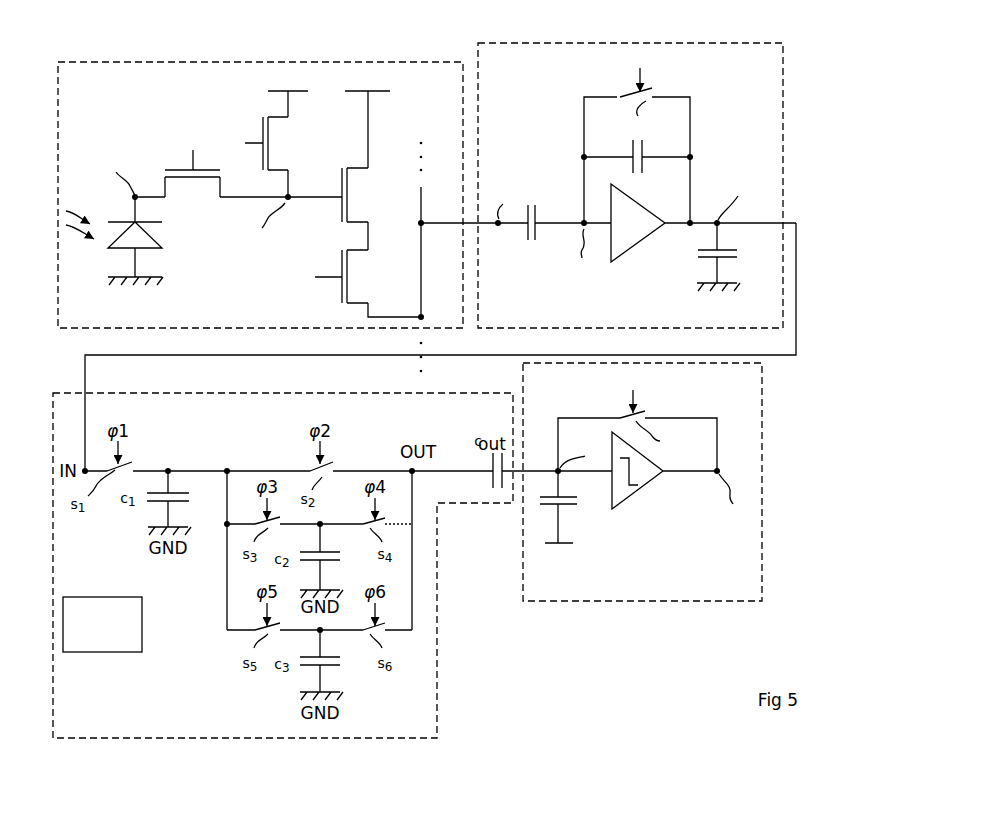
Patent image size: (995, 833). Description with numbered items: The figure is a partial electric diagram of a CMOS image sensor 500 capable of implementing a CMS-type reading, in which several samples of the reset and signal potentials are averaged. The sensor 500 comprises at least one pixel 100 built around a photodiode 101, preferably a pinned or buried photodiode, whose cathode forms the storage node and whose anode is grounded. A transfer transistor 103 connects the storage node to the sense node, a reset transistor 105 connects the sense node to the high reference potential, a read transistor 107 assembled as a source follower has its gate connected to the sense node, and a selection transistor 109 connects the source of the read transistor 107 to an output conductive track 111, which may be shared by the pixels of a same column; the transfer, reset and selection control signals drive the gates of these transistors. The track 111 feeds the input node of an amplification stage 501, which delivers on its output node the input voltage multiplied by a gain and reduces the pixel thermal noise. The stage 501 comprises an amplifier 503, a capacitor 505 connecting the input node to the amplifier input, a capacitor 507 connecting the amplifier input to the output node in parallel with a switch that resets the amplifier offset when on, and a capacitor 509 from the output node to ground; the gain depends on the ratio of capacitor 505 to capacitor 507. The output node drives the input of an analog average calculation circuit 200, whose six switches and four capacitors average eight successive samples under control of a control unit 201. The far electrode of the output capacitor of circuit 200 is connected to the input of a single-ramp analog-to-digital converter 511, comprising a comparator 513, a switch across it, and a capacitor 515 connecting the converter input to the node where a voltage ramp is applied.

The pixel 100 is at (78, 62).
The photodiode 101 is at (108, 256).
The transfer transistor 103 is at (190, 183).
The reset transistor 105 is at (292, 142).
The read transistor 107 is at (351, 198).
The selection transistor 109 is at (351, 286).
The output conductive track 111 is at (426, 266).
The analog average calculation circuit 200 is at (123, 739).
The control unit 201 is at (105, 652).
The CMOS image sensor 500 is at (806, 275).
The amplification stage 501 is at (783, 73).
The amplifier 503 is at (637, 248).
The capacitor 505 is at (530, 243).
The capacitor 507 is at (640, 176).
The capacitor 509 is at (738, 250).
The single-ramp analog-to-digital converter 511 is at (640, 602).
The comparator 513 is at (637, 500).
The capacitor 515 is at (572, 508).